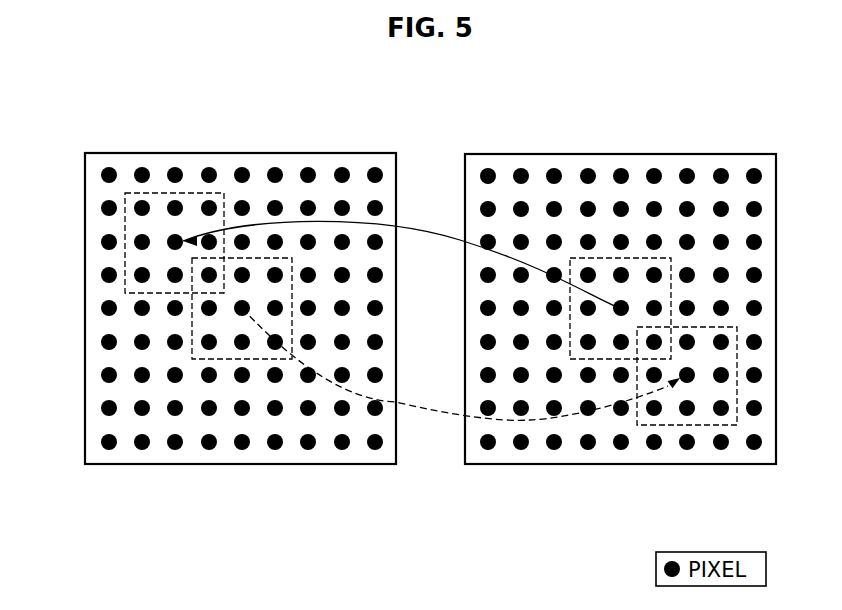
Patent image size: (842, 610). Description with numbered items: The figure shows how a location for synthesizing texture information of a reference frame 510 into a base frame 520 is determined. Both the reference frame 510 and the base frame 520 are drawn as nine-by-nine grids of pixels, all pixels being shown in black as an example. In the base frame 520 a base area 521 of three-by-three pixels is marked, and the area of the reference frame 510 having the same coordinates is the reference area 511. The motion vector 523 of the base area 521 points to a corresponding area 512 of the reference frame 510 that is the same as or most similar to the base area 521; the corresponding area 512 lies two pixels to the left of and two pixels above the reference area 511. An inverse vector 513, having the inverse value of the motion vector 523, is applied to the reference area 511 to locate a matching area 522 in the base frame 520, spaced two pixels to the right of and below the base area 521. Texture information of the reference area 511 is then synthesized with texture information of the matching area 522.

The reference frame 510 is at (238, 153).
The base frame 520 is at (617, 154).
The reference area 511 is at (226, 359).
The corresponding area 512 is at (125, 231).
The inverse vector 513 is at (427, 412).
The base area 521 is at (671, 297).
The matching area 522 is at (702, 425).
The motion vector 523 is at (428, 232).